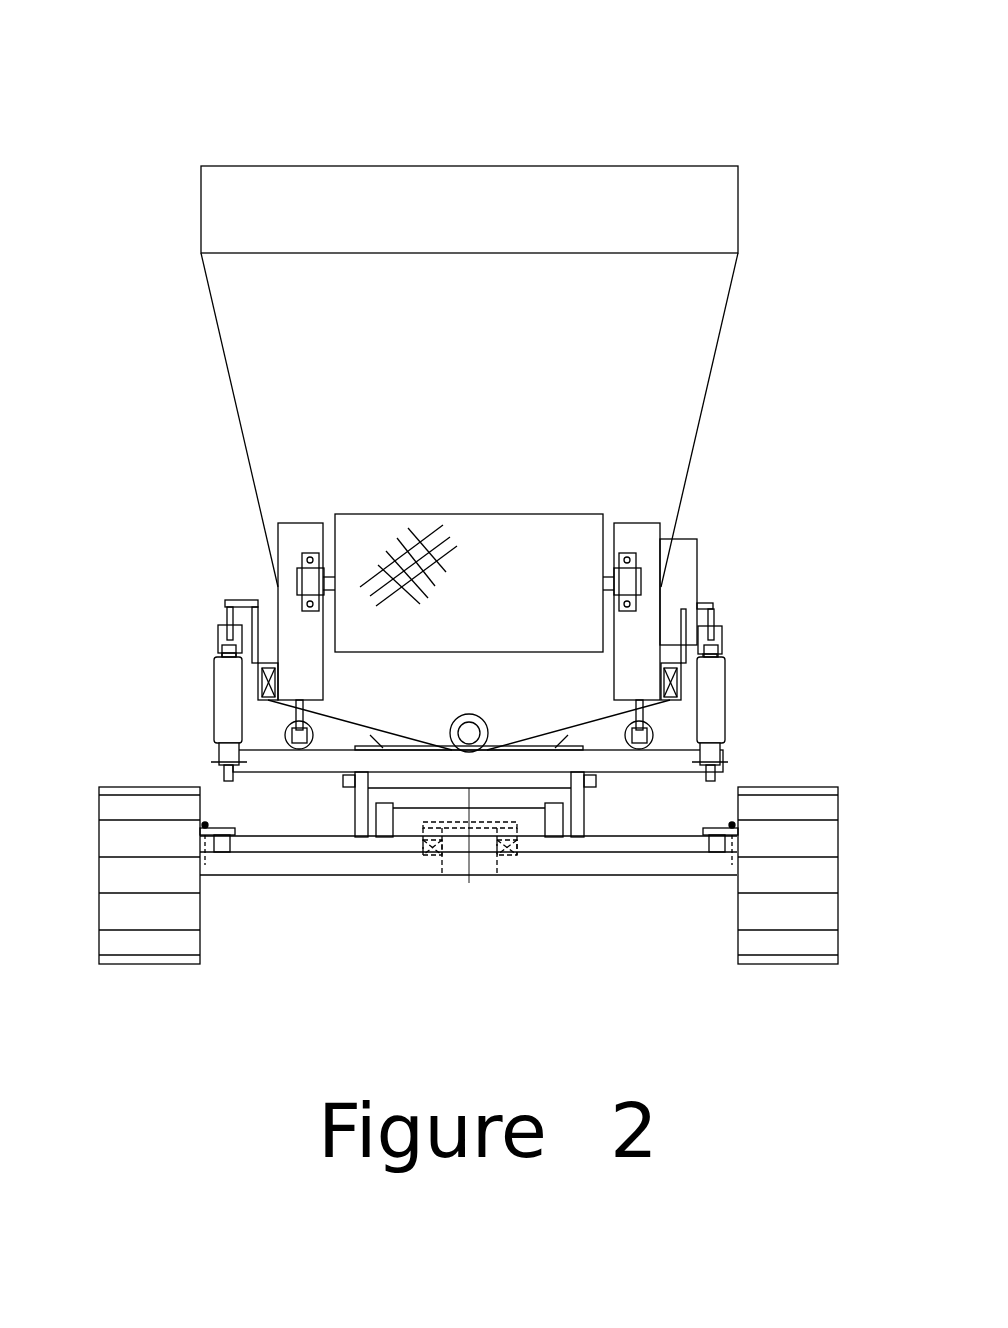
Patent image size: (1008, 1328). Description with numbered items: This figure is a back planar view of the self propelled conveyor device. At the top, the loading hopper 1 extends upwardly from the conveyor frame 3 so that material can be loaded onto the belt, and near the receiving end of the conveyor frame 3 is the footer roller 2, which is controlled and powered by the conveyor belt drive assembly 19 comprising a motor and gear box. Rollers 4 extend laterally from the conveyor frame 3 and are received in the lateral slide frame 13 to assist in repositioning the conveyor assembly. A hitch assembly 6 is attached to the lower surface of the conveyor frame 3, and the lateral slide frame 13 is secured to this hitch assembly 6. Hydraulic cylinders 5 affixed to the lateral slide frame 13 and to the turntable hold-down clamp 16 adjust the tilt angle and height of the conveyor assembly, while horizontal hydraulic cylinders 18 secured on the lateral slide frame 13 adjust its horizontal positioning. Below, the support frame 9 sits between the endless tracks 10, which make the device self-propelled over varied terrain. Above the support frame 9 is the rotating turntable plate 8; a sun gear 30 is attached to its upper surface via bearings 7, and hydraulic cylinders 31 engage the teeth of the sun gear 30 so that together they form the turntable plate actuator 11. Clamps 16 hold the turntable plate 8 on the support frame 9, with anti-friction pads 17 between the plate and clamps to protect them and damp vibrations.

The loading hopper 1 is at (465, 157).
The roller 2 is at (492, 510).
The conveyor frame 3 is at (275, 585).
The rollers 4 is at (268, 680).
The hydraulic cylinders 5 is at (208, 688).
The hitch assembly 6 is at (398, 695).
The bearings 7 is at (506, 845).
The turntable plate 8 is at (312, 848).
The support frame 9 is at (383, 825).
The endless tracks 10 is at (165, 972).
The turntable plate actuator 11 is at (549, 823).
The lateral slide frame 13 is at (238, 598).
The clamps 16 is at (200, 765).
The anti-friction pads 17 is at (200, 765).
The horizontal hydraulic cylinders 18 is at (277, 733).
The conveyor belt drive assembly 19 is at (700, 565).
The sun gear 30 is at (423, 833).
The hydraulic cylinders 31 is at (376, 878).